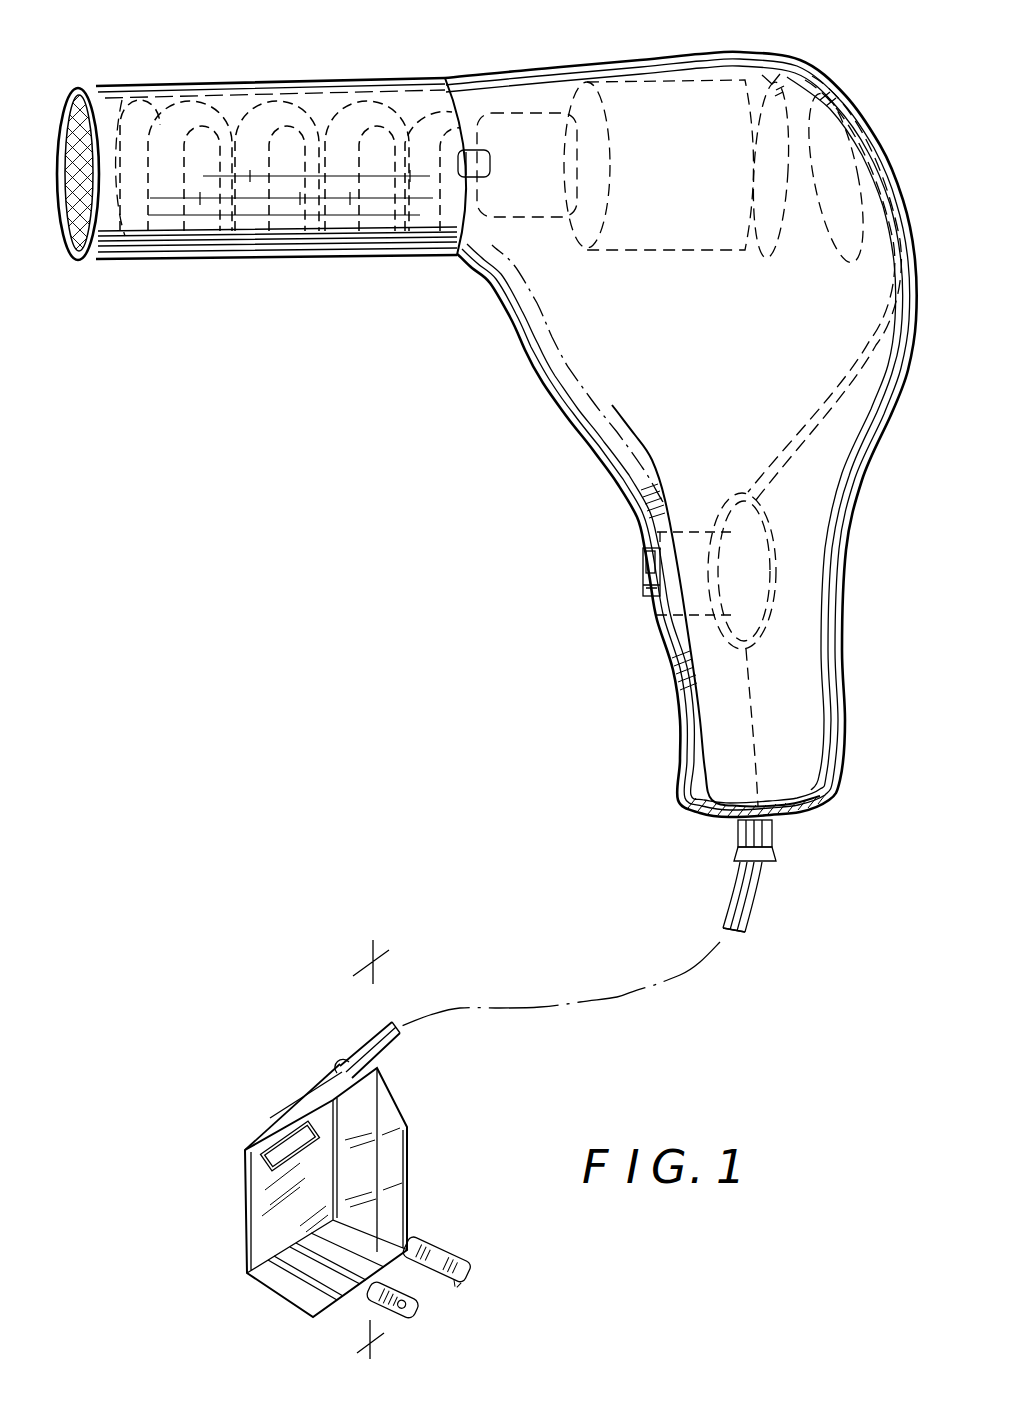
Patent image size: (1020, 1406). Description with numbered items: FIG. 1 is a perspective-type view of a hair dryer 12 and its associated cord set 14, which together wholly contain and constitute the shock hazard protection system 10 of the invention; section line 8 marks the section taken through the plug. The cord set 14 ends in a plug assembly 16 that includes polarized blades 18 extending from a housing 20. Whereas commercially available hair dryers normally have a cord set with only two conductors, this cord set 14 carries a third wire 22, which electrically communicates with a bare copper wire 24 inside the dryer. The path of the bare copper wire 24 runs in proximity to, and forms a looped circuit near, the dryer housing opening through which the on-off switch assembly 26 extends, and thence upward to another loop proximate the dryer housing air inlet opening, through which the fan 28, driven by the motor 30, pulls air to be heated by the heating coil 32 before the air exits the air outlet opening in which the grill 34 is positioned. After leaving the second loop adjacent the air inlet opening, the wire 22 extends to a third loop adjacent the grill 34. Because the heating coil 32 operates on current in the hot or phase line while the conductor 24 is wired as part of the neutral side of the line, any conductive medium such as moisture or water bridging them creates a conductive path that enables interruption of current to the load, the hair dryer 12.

The section line 8- 8 is at (360, 956).
The shock hazard protection system 10 is at (436, 557).
The hair dryer 12 is at (558, 416).
The cord set 14 is at (760, 935).
The plug assembly 16 is at (230, 1156).
The polarized blades 18 is at (414, 1309).
The housing 20 is at (410, 1184).
The third wire 22 is at (758, 893).
The bare copper wire 24 is at (205, 93).
The on-off switch assembly 26 is at (633, 584).
The fan 28 is at (766, 58).
The motor 30 is at (537, 215).
The heating coil 32 is at (293, 240).
The grill 34 is at (80, 170).